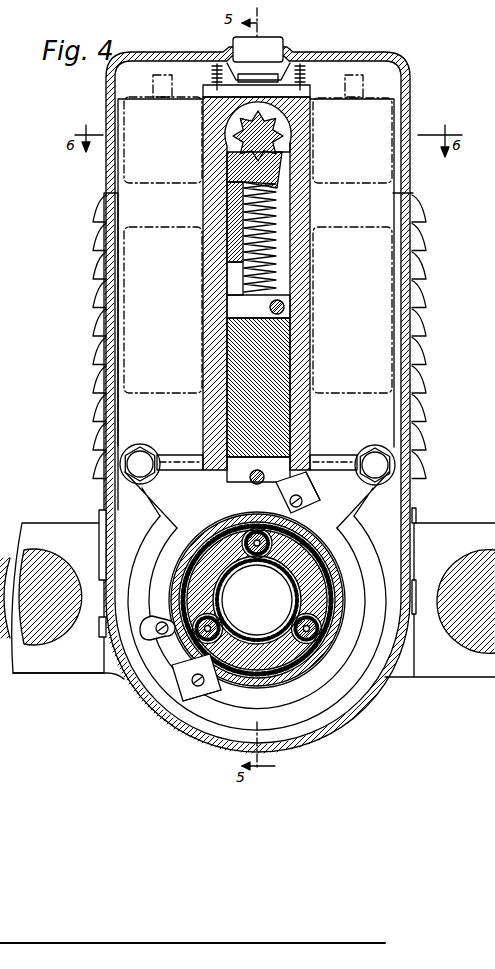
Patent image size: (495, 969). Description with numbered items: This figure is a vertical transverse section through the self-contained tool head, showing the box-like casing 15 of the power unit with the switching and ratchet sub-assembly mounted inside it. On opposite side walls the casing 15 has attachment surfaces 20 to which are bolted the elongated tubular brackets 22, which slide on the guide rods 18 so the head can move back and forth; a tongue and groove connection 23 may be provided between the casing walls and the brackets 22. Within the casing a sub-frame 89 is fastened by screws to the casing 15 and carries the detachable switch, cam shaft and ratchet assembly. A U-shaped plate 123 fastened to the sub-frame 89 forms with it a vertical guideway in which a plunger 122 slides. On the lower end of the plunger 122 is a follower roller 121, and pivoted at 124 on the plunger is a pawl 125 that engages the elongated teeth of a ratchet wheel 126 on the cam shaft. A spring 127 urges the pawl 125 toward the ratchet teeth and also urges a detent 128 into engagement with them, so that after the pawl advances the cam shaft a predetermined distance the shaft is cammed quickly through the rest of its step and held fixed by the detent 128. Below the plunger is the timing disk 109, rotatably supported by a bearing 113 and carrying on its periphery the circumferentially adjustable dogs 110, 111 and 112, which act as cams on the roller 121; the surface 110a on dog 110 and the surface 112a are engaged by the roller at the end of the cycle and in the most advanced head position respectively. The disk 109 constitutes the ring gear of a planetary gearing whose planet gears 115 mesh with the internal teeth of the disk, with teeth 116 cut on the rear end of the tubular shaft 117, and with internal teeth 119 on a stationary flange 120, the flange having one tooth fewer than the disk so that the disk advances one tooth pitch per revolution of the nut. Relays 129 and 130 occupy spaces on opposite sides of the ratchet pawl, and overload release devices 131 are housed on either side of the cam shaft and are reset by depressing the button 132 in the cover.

The casing 15 is at (91, 354).
The sub-frame 89 is at (122, 282).
The button 132 is at (278, 41).
The U-shaped plate 123 is at (300, 289).
The ratchet wheel 126 is at (236, 127).
The detent 128 is at (240, 166).
The spring 127 is at (250, 276).
The pawl 125 is at (285, 211).
The pivot 124 is at (275, 313).
The plunger 122 is at (233, 427).
The follower roller 121 is at (250, 481).
The overload release devices 131 is at (141, 184).
The relay 130 is at (190, 394).
The relay 129 is at (375, 394).
The disk 109 is at (203, 510).
The bearing 113 is at (262, 680).
The stationary flange 120 is at (282, 666).
The teeth 116 is at (257, 599).
The internal teeth 119 is at (297, 553).
The planet gears 115 is at (249, 547).
The tubular shaft 117 is at (268, 566).
The dog 110 is at (276, 503).
The surface 110a is at (305, 492).
The dog 111 is at (153, 628).
The dog 112 is at (180, 680).
The surface 112a is at (203, 705).
The tubular brackets 22 is at (41, 533).
The rods 18 is at (68, 574).
The attachment surfaces 20 is at (100, 544).
The tongue and groove connection 23 is at (102, 615).